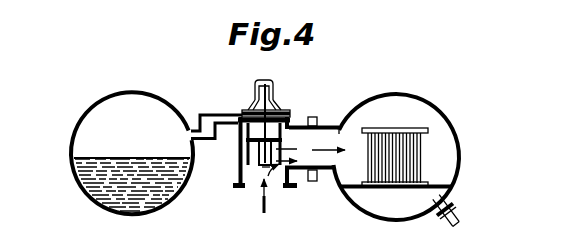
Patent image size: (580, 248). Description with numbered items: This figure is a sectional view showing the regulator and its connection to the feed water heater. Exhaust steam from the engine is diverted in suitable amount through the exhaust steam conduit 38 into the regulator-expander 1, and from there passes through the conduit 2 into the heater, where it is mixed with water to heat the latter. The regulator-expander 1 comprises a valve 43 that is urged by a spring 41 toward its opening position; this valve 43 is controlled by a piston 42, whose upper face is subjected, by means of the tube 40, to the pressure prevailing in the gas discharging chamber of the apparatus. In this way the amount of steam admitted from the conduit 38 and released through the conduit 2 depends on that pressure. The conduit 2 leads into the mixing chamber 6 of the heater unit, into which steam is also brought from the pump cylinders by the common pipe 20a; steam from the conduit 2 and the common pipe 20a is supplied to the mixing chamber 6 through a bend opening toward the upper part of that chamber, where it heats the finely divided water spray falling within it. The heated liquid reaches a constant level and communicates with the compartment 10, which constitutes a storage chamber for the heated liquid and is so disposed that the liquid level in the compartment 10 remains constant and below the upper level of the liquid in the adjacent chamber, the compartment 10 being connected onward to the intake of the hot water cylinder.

The compartment 10 is at (98, 104).
The tube 40 is at (197, 126).
The regulator-expander 1 is at (234, 150).
The spring 41 is at (272, 89).
The piston 42 is at (277, 116).
The valve 43 is at (256, 167).
The exhaust steam conduit 38 is at (251, 196).
The conduit 2 is at (334, 122).
The mixing chamber 6 is at (438, 110).
The common pipe 20a is at (460, 212).